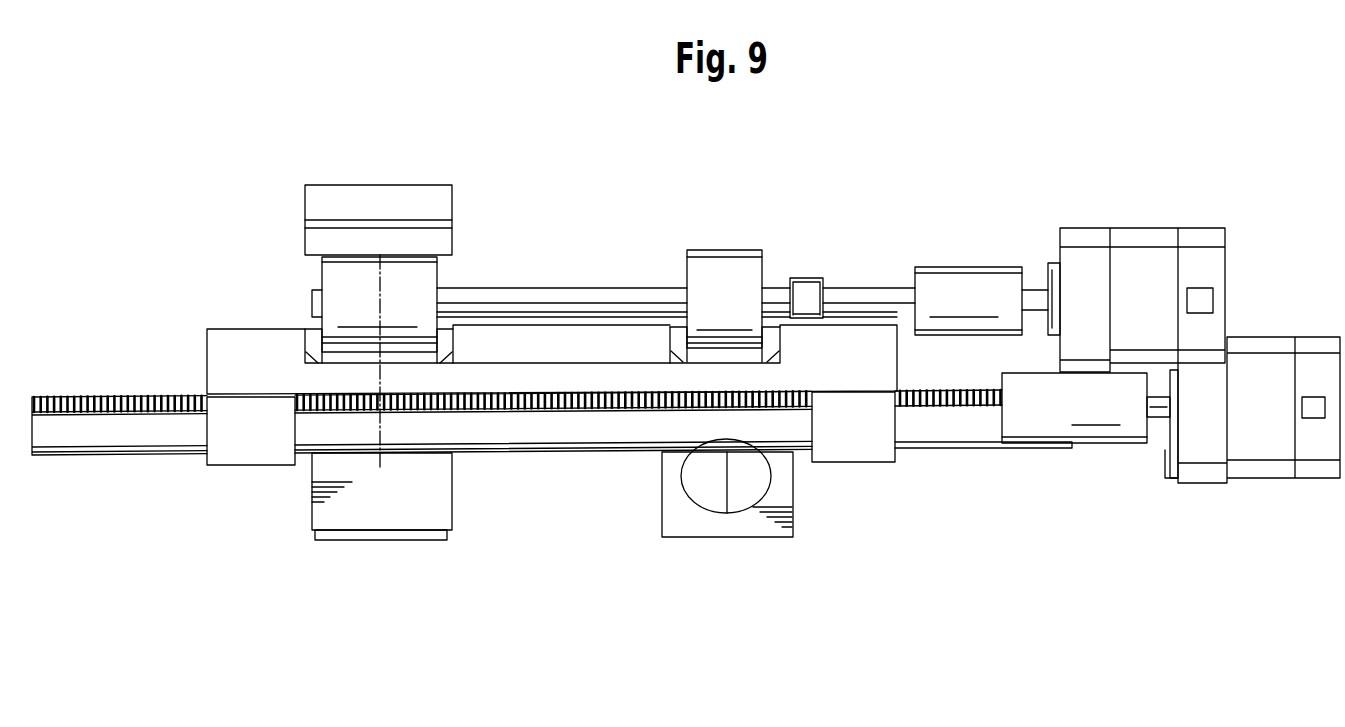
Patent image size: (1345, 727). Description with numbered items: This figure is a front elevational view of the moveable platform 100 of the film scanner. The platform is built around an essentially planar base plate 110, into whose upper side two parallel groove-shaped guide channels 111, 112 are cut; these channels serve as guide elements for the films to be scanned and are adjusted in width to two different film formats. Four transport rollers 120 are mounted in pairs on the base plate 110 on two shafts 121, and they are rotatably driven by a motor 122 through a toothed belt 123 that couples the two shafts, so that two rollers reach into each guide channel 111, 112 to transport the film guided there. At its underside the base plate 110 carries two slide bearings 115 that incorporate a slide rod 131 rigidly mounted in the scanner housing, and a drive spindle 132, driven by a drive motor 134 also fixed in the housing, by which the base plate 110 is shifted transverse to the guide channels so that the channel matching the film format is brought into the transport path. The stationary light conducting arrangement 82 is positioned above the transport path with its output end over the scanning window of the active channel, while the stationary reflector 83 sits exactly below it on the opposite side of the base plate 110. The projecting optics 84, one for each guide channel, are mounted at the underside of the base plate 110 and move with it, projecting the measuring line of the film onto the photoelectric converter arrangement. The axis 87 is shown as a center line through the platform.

The light conducting arrangement 82 is at (420, 200).
The reflector 83 is at (440, 510).
The projecting optics 84 is at (412, 540).
The axis 87 is at (381, 458).
The moveable platform 100 is at (653, 595).
The base plate 110 is at (227, 353).
The guide channel 111 is at (432, 360).
The guide channel 112 is at (698, 355).
The slide bearing 115 is at (238, 445).
The transport roller 120 is at (338, 270).
The shaft 121 is at (890, 297).
The motor 122 is at (1137, 263).
The toothed belt 123 is at (810, 292).
The slide rod 131 is at (563, 430).
The drive spindle 132 is at (933, 397).
The drive motor 134 is at (1252, 443).